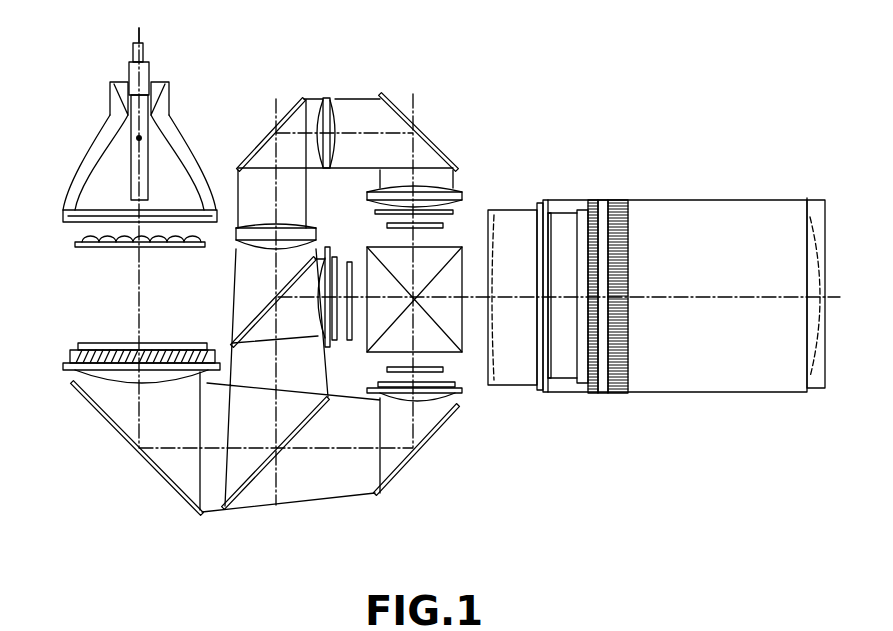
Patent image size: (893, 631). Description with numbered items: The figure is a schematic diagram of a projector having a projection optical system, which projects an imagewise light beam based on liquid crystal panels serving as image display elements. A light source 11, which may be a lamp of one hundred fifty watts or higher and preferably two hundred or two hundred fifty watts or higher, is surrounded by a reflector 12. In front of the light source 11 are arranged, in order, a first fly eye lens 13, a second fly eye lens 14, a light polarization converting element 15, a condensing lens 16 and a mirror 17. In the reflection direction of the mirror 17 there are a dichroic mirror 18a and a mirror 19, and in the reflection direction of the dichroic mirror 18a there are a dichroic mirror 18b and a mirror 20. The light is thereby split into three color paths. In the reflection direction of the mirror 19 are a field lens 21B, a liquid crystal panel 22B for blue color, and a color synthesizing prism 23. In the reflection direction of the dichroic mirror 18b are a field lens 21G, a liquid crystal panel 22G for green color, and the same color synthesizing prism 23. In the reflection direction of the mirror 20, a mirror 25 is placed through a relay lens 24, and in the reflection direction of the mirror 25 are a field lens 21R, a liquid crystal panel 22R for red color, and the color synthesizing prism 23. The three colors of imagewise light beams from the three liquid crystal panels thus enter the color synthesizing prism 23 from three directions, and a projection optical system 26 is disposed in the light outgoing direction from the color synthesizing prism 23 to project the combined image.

The light source 11 is at (140, 138).
The reflector 12 is at (183, 147).
The first fly eye lens 13 is at (82, 238).
The second fly eye lens 14 is at (102, 345).
The light polarization converting element 15 is at (80, 357).
The condensing lens 16 is at (135, 378).
The mirror 17 is at (177, 487).
The dichroic mirror 18a is at (258, 483).
The dichroic mirror 18b is at (245, 330).
The mirror 19 is at (392, 483).
The mirror 20 is at (287, 112).
The field lens 21R is at (423, 197).
The field lens 21G is at (335, 350).
The field lens 21B is at (420, 397).
The liquid crystal panel 22R is at (445, 227).
The liquid crystal panel 22G is at (350, 262).
The liquid crystal panel 22B is at (450, 372).
The color synthesizing prism 23 is at (443, 342).
The relay lens 24 is at (326, 96).
The mirror 25 is at (410, 120).
The projection optical system 26 is at (708, 217).